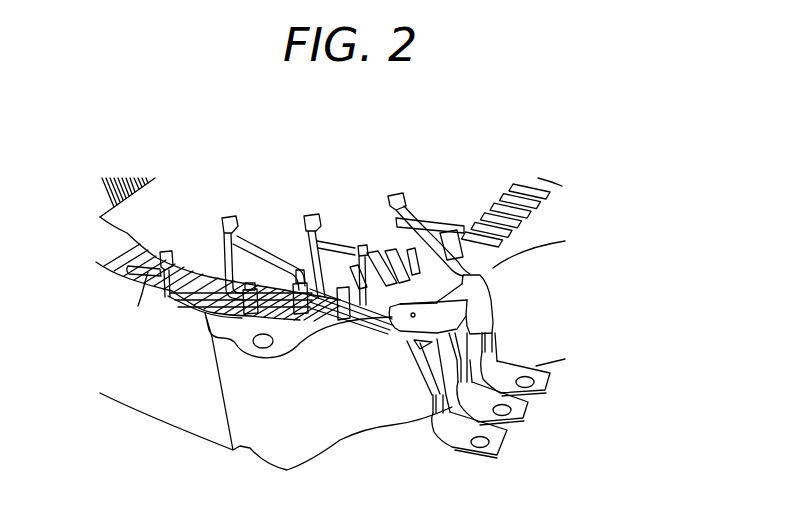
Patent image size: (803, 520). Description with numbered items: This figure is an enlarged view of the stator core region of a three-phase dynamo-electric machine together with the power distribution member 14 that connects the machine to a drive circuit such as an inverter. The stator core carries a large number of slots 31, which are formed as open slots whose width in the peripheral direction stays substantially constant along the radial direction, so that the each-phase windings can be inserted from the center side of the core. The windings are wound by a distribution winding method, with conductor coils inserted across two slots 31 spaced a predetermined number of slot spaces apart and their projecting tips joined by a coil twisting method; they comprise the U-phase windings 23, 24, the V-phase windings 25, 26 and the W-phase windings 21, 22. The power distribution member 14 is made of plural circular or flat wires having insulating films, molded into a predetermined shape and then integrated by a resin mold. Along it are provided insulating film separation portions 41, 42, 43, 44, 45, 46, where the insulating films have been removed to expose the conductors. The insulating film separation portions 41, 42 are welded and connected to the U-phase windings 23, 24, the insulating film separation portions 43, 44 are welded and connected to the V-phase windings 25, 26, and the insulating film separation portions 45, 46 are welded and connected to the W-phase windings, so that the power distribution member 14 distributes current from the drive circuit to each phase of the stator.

The power distribution member 14 is at (487, 308).
The W-phase winding 21 is at (428, 222).
The W-phase winding 22 is at (241, 308).
The U-phase winding 23 is at (243, 258).
The U-phase winding 24 is at (358, 248).
The V-phase winding 25 is at (331, 245).
The V-phase winding 26 is at (105, 297).
The slot 31 is at (124, 238).
The insulating film separation portion 41 is at (231, 213).
The insulating film separation portion 42 is at (363, 327).
The insulating film separation portion 43 is at (309, 213).
The insulating film separation portion 44 is at (172, 294).
The insulating film separation portion 45 is at (398, 197).
The insulating film separation portion 46 is at (277, 310).